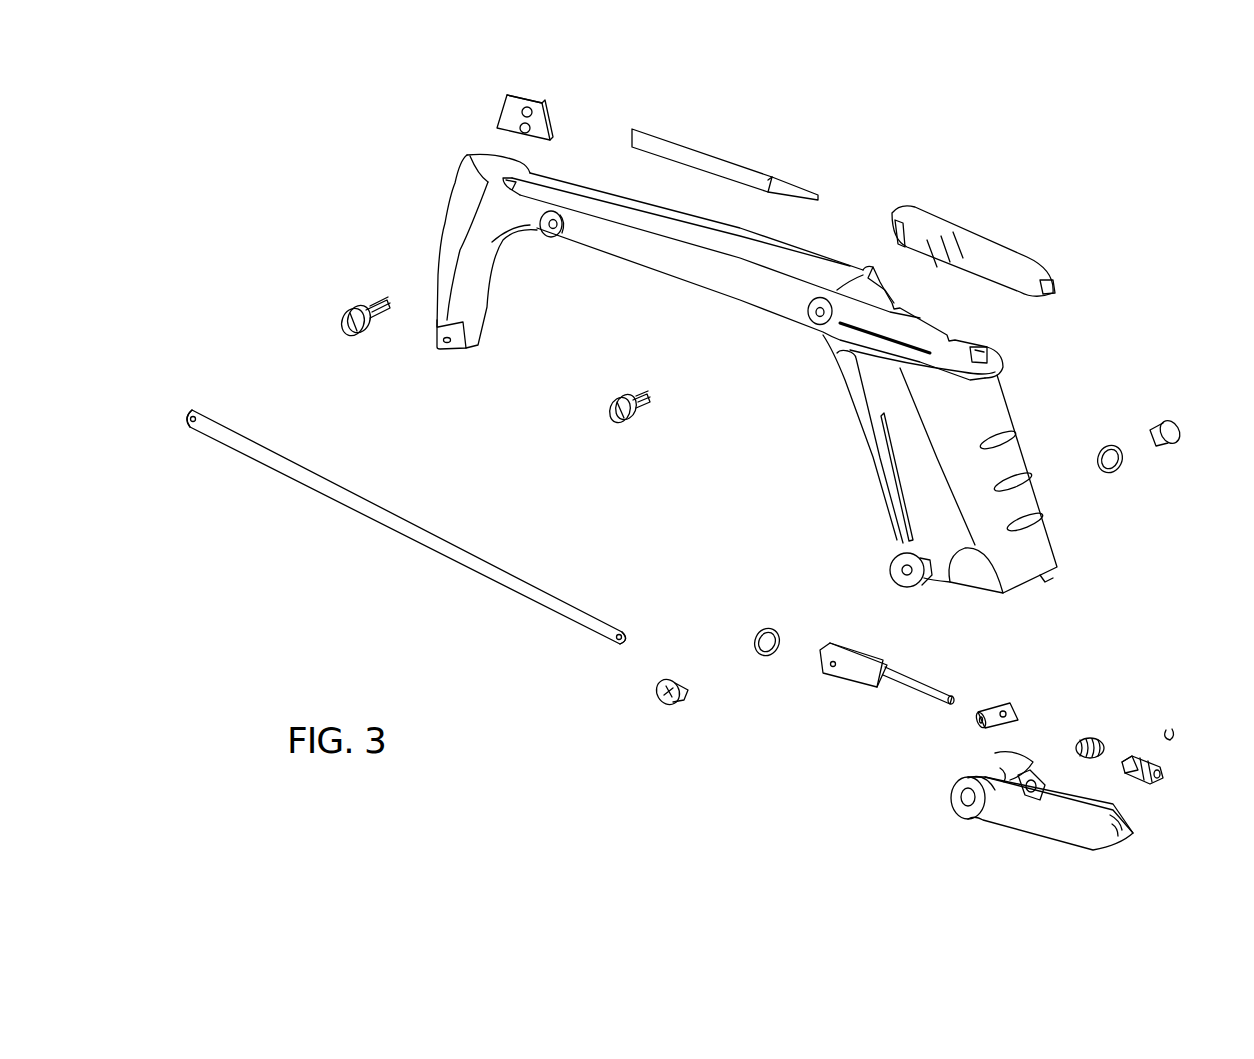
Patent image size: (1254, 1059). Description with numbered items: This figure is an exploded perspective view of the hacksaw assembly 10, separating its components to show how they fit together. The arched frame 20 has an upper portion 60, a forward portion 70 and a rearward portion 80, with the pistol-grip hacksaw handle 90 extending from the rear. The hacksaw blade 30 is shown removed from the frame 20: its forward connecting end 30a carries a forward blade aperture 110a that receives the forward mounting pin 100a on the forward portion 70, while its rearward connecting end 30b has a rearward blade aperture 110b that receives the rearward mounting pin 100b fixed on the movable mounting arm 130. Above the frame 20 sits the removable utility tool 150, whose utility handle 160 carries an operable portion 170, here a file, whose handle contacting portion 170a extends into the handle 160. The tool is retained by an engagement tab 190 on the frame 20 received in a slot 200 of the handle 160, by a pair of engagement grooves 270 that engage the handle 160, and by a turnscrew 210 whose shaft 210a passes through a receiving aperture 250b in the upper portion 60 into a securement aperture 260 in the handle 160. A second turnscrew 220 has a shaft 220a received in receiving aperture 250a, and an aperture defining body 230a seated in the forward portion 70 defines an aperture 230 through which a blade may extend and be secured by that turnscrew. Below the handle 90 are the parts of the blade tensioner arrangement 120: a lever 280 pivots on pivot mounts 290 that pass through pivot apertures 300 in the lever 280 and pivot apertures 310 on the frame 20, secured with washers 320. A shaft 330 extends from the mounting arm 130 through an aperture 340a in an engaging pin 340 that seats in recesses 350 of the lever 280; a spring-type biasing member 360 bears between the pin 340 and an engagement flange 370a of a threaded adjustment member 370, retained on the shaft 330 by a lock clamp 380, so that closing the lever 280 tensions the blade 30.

The hacksaw assembly 10 is at (1130, 122).
The frame 20 is at (768, 315).
The hacksaw blade 30 is at (404, 537).
The forward connecting end 30a is at (192, 435).
The rearward connecting end 30b is at (616, 650).
The upper portion 60 is at (660, 280).
The forward portion 70 is at (470, 290).
The rearward portion 80 is at (876, 447).
The hacksaw handle 90 is at (1032, 500).
The forward mounting pin 100a is at (449, 344).
The rearward mounting pin 100b is at (835, 668).
The forward blade aperture 110a is at (215, 398).
The rearward blade aperture 110b is at (645, 618).
The blade tensioner arrangement 120 is at (870, 764).
The movable mounting arm 130 is at (818, 662).
The removable utility tool 150 is at (948, 172).
The utility handle 160 is at (1012, 243).
The operable portion 170 is at (722, 163).
The handle contacting portion 170a is at (800, 188).
The engagement tab 190 is at (985, 347).
The slot 200 is at (1056, 292).
The turnscrew 210 is at (610, 420).
The shaft 210a is at (640, 393).
The turnscrew 220 is at (342, 323).
The shaft 220a is at (375, 302).
The aperture 230 is at (550, 110).
The aperture defining body 230a is at (515, 108).
The receiving aperture 250a is at (551, 232).
The receiving aperture 250b is at (818, 322).
The securement aperture 260 is at (893, 226).
The engagement grooves 270 is at (865, 280).
The lever 280 is at (1028, 825).
The pivot mounts 290 is at (1180, 440).
The pivot apertures 300 is at (995, 765).
The pivot apertures 310 is at (898, 575).
The washers 320 is at (1110, 445).
The shaft 330 is at (918, 682).
The engaging pin 340 is at (1008, 700).
The aperture 340a is at (1040, 690).
The recesses 350 is at (1037, 778).
The biasing member 360 is at (1092, 735).
The adjustment member 370 is at (1145, 775).
The engagement flange 370a is at (1143, 760).
The lock clamp 380 is at (1175, 735).